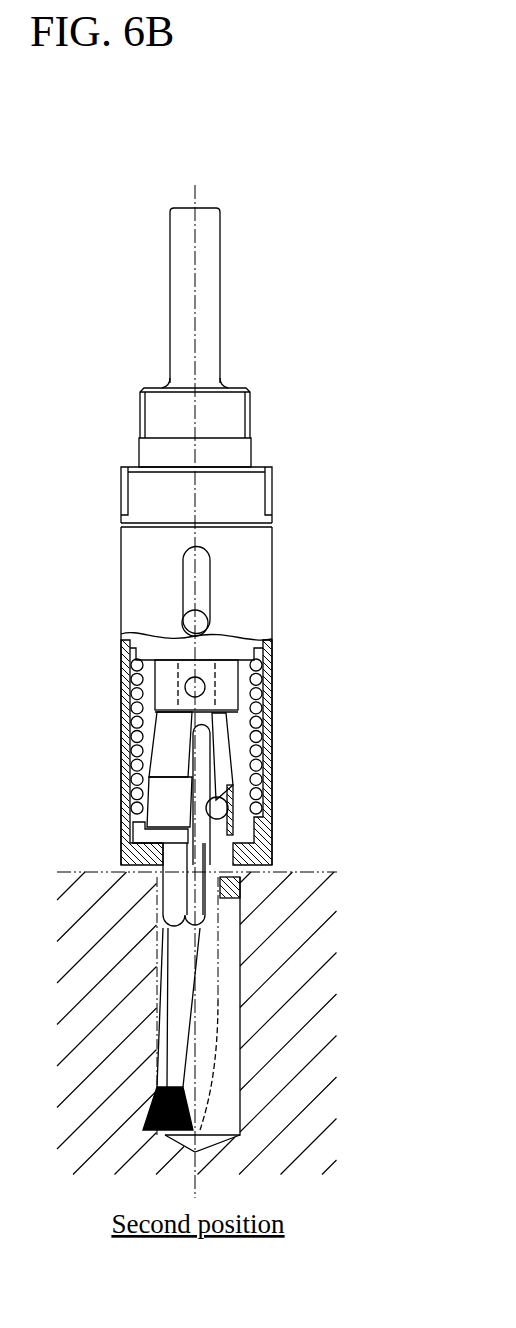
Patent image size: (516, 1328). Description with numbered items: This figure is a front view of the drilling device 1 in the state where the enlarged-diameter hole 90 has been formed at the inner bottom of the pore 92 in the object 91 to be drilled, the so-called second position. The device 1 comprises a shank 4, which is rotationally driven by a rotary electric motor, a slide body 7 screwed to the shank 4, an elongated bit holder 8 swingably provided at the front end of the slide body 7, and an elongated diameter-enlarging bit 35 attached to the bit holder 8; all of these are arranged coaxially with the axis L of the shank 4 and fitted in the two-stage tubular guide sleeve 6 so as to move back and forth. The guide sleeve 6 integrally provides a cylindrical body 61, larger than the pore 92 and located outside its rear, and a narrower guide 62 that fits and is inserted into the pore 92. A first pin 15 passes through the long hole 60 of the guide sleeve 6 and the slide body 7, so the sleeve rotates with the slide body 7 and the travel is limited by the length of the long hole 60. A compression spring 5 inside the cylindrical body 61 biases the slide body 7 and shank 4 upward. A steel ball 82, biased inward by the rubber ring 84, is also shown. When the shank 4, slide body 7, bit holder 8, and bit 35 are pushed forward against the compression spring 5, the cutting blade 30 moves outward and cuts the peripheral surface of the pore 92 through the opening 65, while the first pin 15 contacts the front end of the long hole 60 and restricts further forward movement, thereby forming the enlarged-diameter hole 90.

The axis L is at (197, 267).
The drilling device 1 is at (299, 348).
The shank 4 is at (140, 412).
The slide body 7 is at (121, 505).
The compression spring 5 is at (270, 670).
The long hole 60 is at (213, 583).
The first pin 15 is at (210, 623).
The bit holder 8 is at (167, 740).
The rubber ring 84 is at (157, 800).
The cylindrical body 61 is at (143, 826).
The guide 62 is at (160, 975).
The guide sleeve 6 is at (44, 766).
The diameter-enlarging bit 35 is at (185, 962).
The steel ball 82 is at (229, 807).
The object to be drilled 91 is at (293, 871).
The pore 92 is at (238, 1050).
The opening 65 is at (167, 1015).
The cutting blade 30 is at (147, 1108).
The enlarged-diameter hole 90 is at (165, 1133).